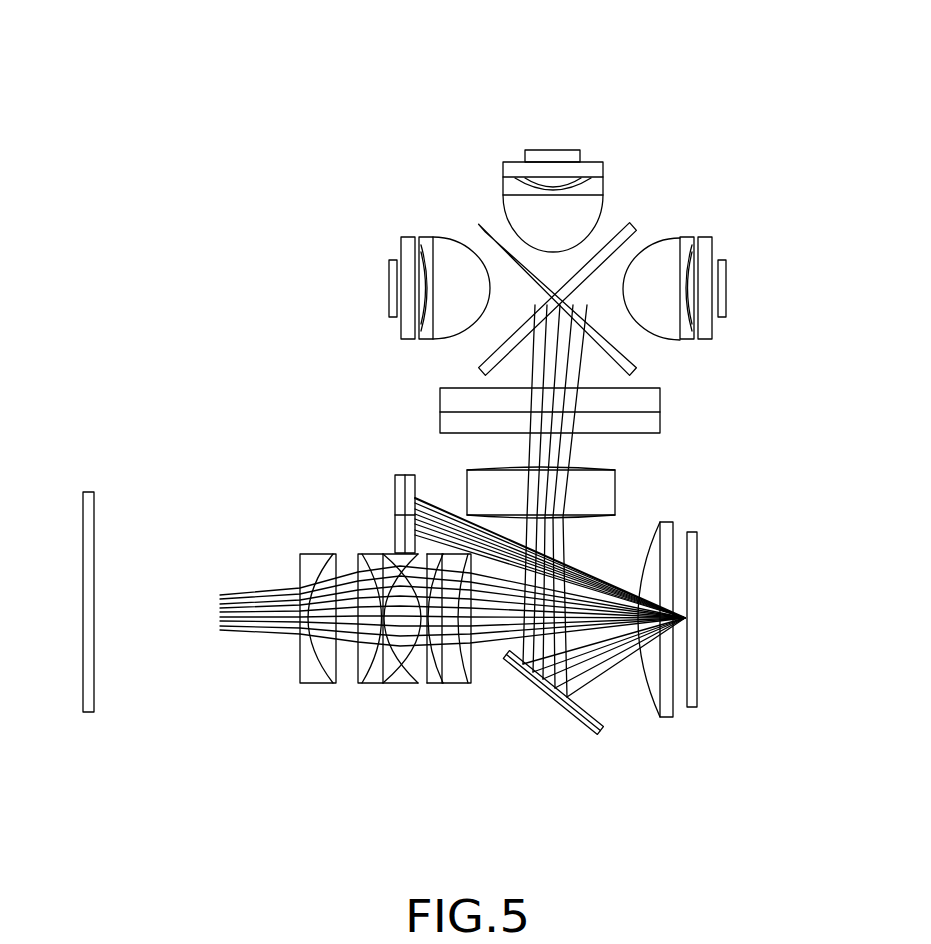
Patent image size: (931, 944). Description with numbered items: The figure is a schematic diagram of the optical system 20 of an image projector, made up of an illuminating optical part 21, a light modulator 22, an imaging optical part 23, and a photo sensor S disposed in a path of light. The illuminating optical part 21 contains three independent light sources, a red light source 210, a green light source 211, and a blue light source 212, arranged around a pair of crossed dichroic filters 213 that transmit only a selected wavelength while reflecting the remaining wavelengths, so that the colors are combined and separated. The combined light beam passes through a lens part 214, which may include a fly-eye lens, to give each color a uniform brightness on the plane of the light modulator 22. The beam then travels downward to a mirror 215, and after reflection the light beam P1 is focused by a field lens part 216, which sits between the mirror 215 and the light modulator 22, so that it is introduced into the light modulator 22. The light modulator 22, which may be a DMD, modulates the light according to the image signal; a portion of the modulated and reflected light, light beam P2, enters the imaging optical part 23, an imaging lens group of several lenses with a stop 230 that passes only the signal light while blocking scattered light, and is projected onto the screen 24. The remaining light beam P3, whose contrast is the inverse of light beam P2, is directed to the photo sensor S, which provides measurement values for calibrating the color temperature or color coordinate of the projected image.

The optical system 20 is at (237, 113).
The illuminating optical part 21 is at (757, 157).
The light modulator 22 is at (699, 618).
The imaging optical part 23 is at (470, 697).
The screen 24 is at (87, 490).
The red light source 210 is at (389, 289).
The green light source 211 is at (552, 148).
The blue light source 212 is at (738, 277).
The filter 213 is at (480, 223).
The lens part 214 is at (672, 390).
The mirror 215 is at (550, 703).
The field lens part 216 is at (662, 718).
The stop 230 is at (385, 675).
The photo sensor S is at (395, 492).
The light beam P1 is at (528, 460).
The light beam P2 is at (252, 594).
The light beam P3 is at (585, 572).